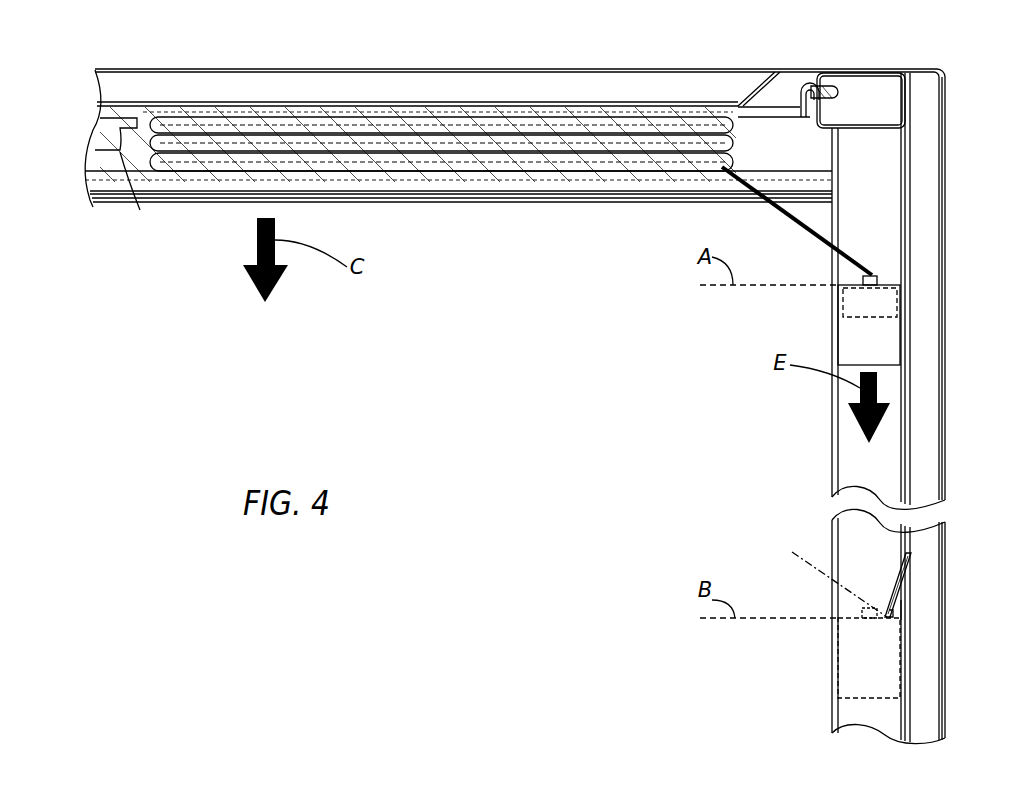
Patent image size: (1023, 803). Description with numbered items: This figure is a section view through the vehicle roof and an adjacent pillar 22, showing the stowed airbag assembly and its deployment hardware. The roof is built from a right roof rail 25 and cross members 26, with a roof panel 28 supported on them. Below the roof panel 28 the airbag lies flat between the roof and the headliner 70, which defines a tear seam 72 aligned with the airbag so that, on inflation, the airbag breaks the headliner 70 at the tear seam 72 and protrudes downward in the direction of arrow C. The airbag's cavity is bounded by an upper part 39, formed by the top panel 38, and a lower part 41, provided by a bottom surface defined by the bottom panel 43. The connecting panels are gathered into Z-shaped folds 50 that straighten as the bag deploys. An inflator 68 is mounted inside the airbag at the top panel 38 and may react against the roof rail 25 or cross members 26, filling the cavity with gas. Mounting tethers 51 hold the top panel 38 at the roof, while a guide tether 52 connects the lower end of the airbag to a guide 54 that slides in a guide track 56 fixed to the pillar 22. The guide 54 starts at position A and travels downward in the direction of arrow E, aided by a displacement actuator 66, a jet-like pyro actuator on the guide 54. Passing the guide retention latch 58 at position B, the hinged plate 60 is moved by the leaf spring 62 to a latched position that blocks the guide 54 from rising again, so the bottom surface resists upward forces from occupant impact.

The pillar 22 is at (945, 455).
The right roof rail 25 is at (870, 130).
The cross member 26 is at (190, 102).
The roof panel 28 is at (410, 70).
The top panel 38 is at (143, 110).
The upper part 39 is at (287, 107).
The lower part 41 is at (108, 182).
The bottom panel 43 is at (97, 168).
The folds 50 is at (736, 162).
The mounting tether 51 is at (780, 107).
The guide tether 52 is at (860, 258).
The guide 54 is at (885, 282).
The guide track 56 is at (822, 532).
The guide retention latch 58 is at (887, 573).
The hinged plate 60 is at (893, 610).
The leaf spring 62 is at (892, 600).
The displacement actuator 66 is at (902, 300).
The inflator 68 is at (140, 210).
The headliner 70 is at (667, 202).
The tear seam 72 is at (583, 202).